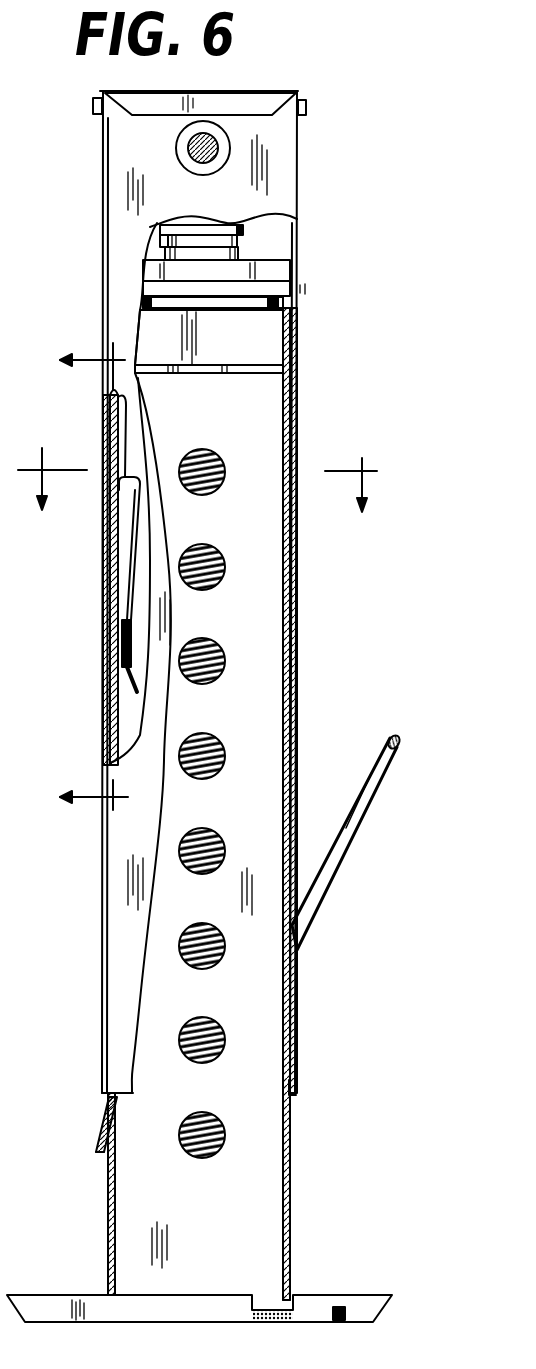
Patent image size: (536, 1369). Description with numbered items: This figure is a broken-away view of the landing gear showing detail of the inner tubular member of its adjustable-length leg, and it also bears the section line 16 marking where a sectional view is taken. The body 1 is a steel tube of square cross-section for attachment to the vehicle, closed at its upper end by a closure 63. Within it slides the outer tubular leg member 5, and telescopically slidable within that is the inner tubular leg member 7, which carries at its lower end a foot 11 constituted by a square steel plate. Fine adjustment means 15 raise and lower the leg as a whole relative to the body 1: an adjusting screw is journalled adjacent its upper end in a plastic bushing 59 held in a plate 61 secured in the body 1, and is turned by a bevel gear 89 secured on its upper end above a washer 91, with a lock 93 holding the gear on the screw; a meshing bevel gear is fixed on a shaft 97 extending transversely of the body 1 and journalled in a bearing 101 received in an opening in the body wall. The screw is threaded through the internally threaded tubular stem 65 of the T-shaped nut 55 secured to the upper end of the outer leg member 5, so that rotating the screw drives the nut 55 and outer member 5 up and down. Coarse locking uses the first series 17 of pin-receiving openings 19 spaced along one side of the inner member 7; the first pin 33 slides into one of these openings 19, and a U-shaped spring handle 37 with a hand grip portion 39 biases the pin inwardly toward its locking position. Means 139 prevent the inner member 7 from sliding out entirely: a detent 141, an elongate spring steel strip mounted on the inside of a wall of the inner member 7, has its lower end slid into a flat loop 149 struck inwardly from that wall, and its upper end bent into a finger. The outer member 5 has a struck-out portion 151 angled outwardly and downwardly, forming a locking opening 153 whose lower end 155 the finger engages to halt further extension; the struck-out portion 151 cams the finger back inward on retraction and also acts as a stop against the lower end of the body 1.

The body 1 is at (298, 604).
The outer tubular leg member 5 is at (291, 491).
The inner tubular leg member 7 is at (241, 665).
The foot 11 is at (155, 1323).
The fine adjustment means 15 is at (207, 473).
The section line 16- 16 is at (92, 581).
The first series of pin-receiving openings 17 is at (226, 1149).
The pin-receiving openings 19 is at (216, 792).
The first pin 33 is at (215, 1112).
The handle 37 is at (350, 850).
The hand grip portion 39 is at (398, 735).
The nut 55 is at (251, 333).
The plastic bushing 59 is at (157, 248).
The plate 61 is at (282, 271).
The closure 63 is at (222, 92).
The tubular stem 65 is at (207, 373).
The bevel gear 89 is at (248, 222).
The washer 91 is at (160, 240).
The lock 93 is at (235, 240).
The shaft 97 is at (178, 148).
The bearing 101 is at (231, 140).
The means for preventing the inner leg member from sliding out 139 is at (139, 524).
The detent 141 is at (128, 580).
The flat loop 149 is at (135, 645).
The struck-out portion 151 is at (106, 1122).
The locking opening 153 is at (118, 1148).
The lower end of locking opening 155 is at (100, 1162).